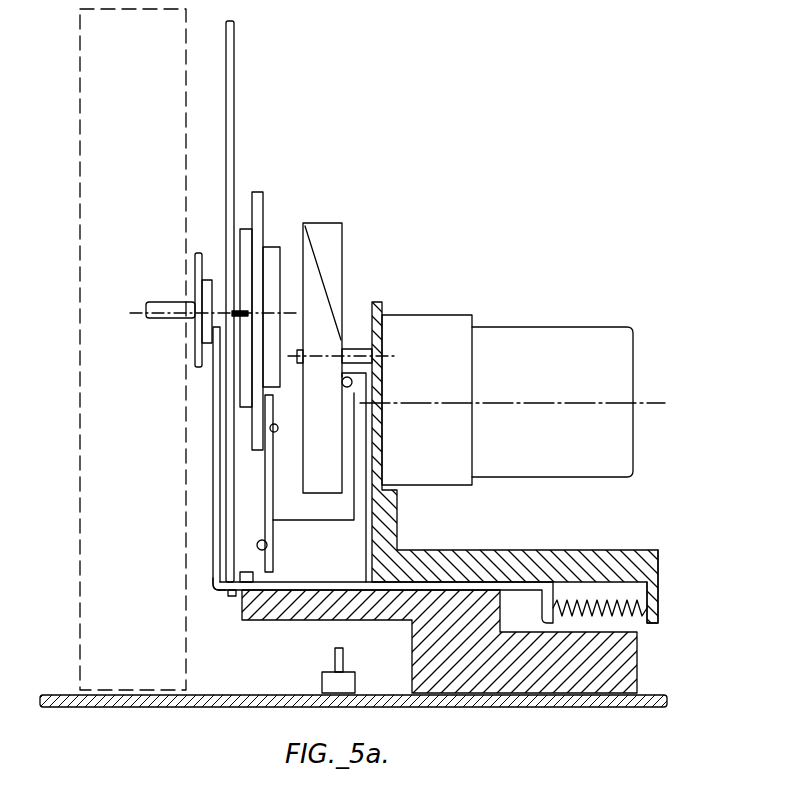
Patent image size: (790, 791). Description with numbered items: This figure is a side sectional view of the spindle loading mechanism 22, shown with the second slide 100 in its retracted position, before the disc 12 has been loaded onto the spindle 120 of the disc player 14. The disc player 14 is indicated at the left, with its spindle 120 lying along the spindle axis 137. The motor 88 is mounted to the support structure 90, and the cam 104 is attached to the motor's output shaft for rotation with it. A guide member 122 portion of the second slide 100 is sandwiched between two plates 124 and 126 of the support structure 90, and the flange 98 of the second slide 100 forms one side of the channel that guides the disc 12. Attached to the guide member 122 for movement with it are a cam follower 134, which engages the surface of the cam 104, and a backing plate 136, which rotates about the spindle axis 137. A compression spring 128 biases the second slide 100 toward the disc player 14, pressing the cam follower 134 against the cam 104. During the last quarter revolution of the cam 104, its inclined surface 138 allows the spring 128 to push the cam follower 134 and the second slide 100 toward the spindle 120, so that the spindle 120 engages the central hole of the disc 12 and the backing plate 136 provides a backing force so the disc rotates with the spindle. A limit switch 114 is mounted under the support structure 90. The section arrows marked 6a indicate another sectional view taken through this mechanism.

The disc 12 is at (234, 68).
The disc player 14 is at (80, 167).
The spindle loading mechanism 22 is at (341, 162).
The motor 88 is at (525, 327).
The support structure 90 is at (527, 548).
The flange 98 is at (213, 417).
The second slide 100 is at (212, 590).
The cam 104 is at (336, 223).
The limit switch 114 is at (322, 686).
The spindle 120 is at (196, 290).
The guide member 122 is at (448, 582).
The plate 124 is at (593, 550).
The plate 126 is at (638, 673).
The compression spring 128 is at (630, 610).
The cam follower 134 is at (355, 503).
The backing plate 136 is at (245, 229).
The spindle axis 137 is at (140, 312).
The inclined surface 138 is at (326, 278).
The section line 6a is at (203, 575).